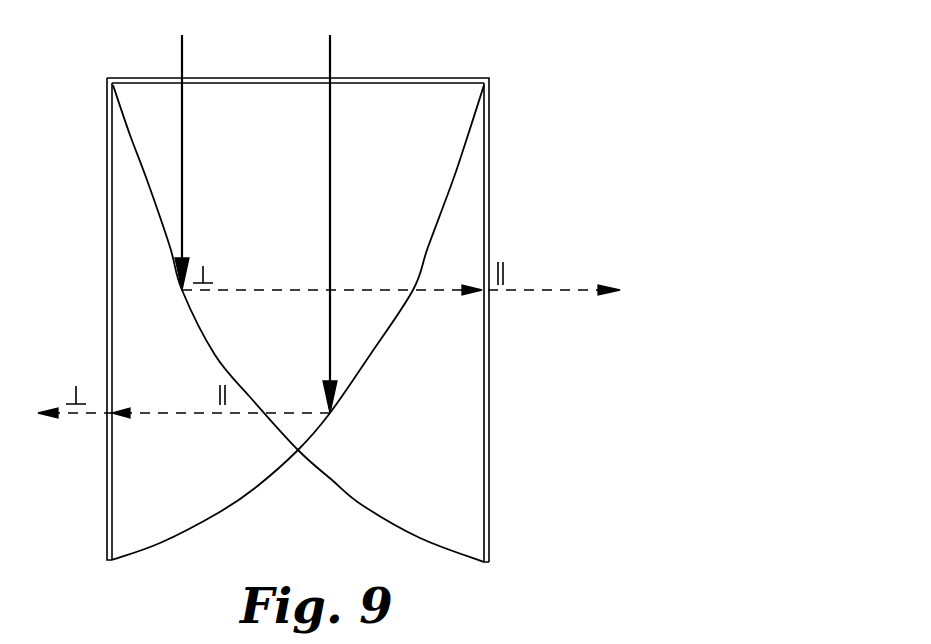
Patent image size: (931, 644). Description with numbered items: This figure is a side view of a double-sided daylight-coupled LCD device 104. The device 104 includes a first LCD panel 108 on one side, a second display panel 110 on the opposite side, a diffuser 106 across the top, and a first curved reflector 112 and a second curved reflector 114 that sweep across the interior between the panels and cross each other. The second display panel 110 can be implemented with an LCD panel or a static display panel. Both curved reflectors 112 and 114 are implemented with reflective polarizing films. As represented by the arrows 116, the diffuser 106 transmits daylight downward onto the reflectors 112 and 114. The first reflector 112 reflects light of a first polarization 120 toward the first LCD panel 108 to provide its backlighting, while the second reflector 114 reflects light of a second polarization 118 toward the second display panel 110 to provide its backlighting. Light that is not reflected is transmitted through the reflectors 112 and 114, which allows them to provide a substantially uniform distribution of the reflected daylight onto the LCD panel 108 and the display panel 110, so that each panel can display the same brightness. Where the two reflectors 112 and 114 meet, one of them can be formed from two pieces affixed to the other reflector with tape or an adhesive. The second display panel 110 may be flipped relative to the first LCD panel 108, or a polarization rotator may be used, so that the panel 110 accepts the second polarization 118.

The double-sided daylight-coupled LCD device 104 is at (520, 46).
The diffuser 106 is at (459, 80).
The first LCD panel 108 is at (107, 260).
The second display panel 110 is at (490, 220).
The first curved reflector 112 is at (218, 514).
The second curved reflector 114 is at (362, 506).
The arrow 116 is at (183, 55).
The light of a second polarization 118 is at (265, 290).
The light of a first polarization 120 is at (165, 413).